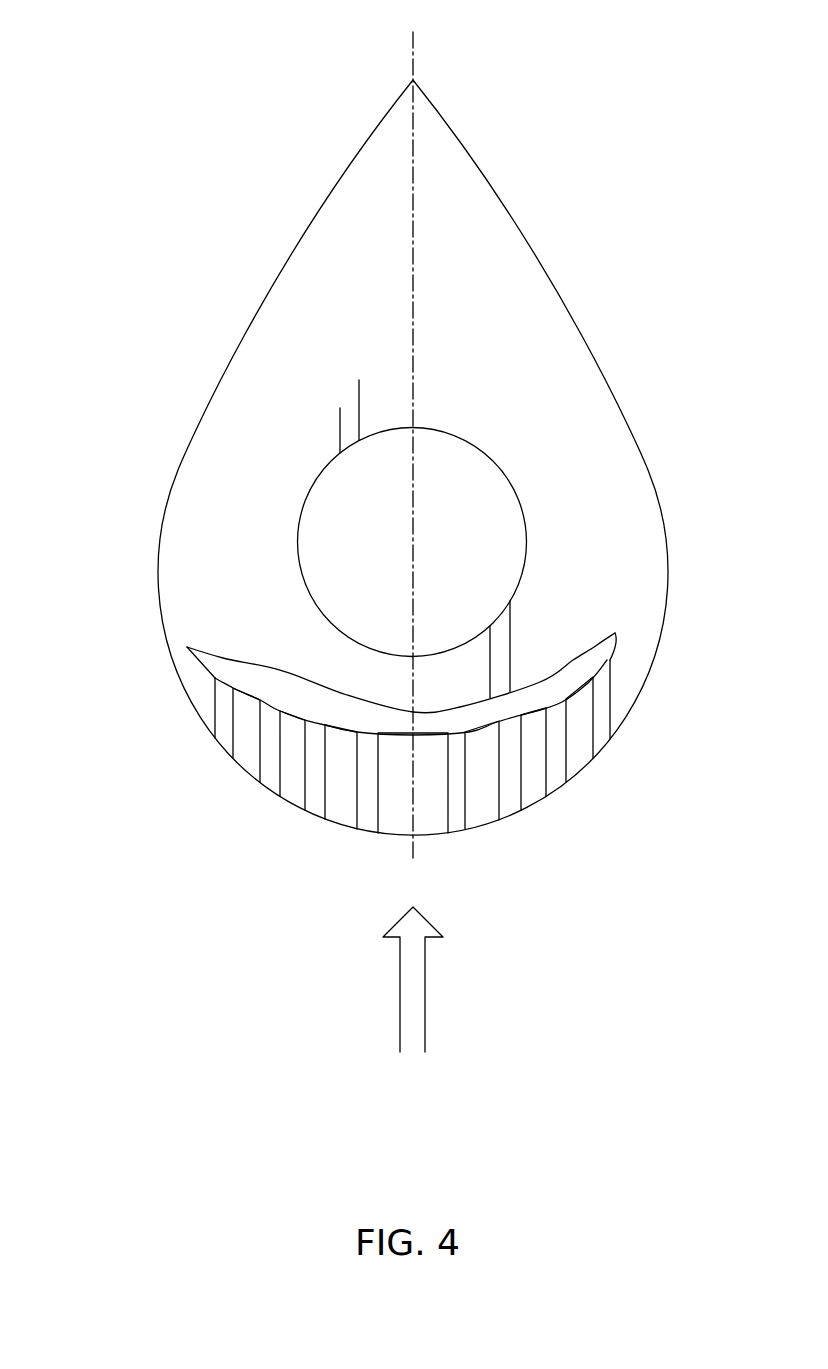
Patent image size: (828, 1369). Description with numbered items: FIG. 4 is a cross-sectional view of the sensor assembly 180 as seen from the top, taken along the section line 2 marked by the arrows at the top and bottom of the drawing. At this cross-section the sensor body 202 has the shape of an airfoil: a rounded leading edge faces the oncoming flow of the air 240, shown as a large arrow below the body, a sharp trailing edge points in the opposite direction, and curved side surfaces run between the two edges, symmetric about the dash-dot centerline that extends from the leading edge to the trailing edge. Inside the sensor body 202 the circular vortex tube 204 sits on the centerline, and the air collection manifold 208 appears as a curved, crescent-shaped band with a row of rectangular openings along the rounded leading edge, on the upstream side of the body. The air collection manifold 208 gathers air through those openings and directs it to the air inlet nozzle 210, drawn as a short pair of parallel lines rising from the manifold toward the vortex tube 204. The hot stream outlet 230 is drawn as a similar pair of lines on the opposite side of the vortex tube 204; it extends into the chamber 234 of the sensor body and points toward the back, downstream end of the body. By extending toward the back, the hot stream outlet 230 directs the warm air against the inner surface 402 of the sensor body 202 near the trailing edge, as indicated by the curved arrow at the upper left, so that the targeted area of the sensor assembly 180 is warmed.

The section line 2- 2 is at (413, 32).
The sensor assembly 180 is at (592, 892).
The sensor body 202 is at (157, 557).
The vortex tube 204 is at (350, 527).
The air collection manifold 208 is at (272, 702).
The air inlet nozzle 210 is at (512, 634).
The hot stream outlet 230 is at (360, 407).
The chamber 234 is at (270, 328).
The air 240 is at (410, 1000).
The inner surface 402 is at (350, 203).